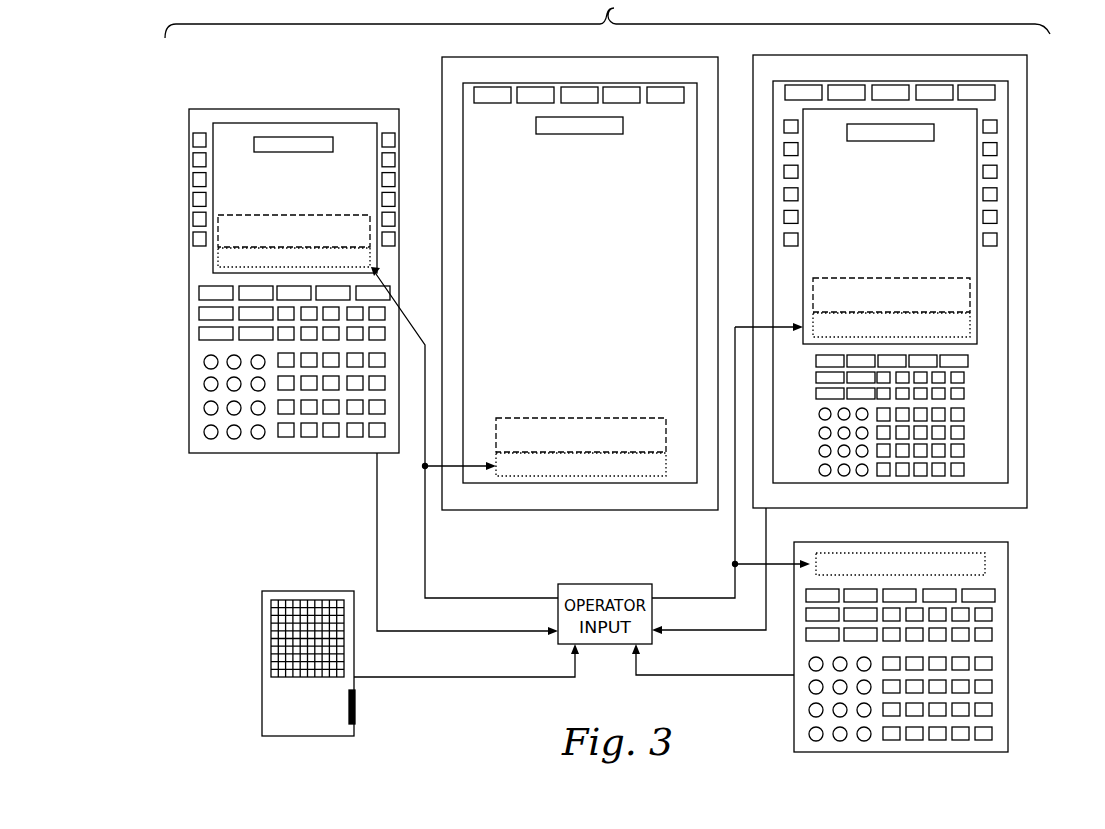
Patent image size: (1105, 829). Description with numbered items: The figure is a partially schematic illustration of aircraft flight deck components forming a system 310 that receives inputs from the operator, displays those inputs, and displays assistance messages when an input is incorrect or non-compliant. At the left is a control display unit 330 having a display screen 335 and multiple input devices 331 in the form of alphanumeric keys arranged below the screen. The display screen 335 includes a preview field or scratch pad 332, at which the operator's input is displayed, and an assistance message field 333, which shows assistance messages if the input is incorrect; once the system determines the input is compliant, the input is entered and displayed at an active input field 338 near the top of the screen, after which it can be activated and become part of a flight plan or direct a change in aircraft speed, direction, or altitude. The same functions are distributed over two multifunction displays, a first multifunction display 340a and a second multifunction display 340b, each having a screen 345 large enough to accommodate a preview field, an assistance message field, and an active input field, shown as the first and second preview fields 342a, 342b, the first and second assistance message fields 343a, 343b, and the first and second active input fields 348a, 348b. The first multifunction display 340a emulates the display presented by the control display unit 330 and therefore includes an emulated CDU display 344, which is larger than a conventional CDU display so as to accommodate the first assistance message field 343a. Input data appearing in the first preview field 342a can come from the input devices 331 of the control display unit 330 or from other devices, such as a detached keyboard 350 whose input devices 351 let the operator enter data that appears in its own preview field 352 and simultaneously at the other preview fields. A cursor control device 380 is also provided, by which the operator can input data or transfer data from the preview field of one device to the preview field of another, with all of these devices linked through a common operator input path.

The system 310 is at (607, 19).
The control display unit 330 is at (255, 294).
The input devices 331 is at (221, 440).
The preview field 332 is at (218, 262).
The assistance message field 333 is at (218, 225).
The display screen 335 is at (212, 160).
The active input field 338 is at (278, 137).
The first multifunction display 340a is at (922, 281).
The second multifunction display 340b is at (718, 296).
The first preview field 342a is at (972, 323).
The second preview field 342b is at (597, 478).
The first assistance message field 343a is at (955, 278).
The second assistance message field 343b is at (603, 418).
The emulated CDU display 344 is at (997, 160).
The screen 345 is at (535, 83).
The first active input field 348a is at (912, 141).
The second active input field 348b is at (624, 128).
The detached keyboard 350 is at (935, 648).
The input devices 351 is at (993, 735).
The preview field 352 is at (990, 568).
The cursor control device 380 is at (262, 703).